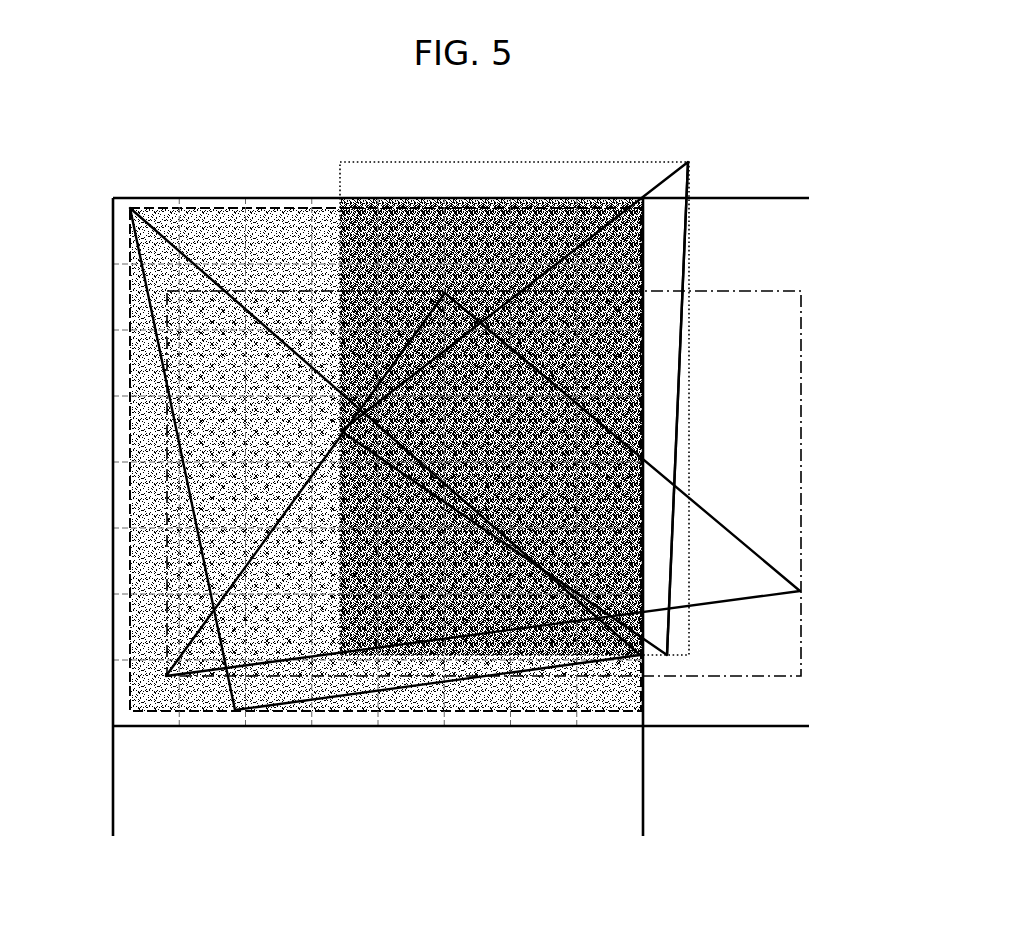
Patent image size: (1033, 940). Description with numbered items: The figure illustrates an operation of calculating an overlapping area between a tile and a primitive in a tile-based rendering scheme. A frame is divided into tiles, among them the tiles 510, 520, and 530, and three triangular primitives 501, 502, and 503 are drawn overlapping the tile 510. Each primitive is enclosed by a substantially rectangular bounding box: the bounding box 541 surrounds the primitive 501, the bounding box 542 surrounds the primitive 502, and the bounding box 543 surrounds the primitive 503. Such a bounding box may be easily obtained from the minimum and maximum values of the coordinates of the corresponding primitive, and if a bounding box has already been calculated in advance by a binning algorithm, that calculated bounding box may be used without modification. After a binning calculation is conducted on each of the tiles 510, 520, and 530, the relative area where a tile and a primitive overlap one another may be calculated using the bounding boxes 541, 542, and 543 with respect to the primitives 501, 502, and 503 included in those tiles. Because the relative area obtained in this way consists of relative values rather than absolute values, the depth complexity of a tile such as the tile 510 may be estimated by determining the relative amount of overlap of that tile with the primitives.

The primitive 501 is at (672, 390).
The primitive 502 is at (148, 221).
The primitive 503 is at (770, 564).
The tile 510 is at (220, 189).
The tile 520 is at (737, 189).
The tile 530 is at (105, 766).
The bounding box 541 is at (484, 155).
The bounding box 542 is at (122, 482).
The bounding box 543 is at (793, 434).